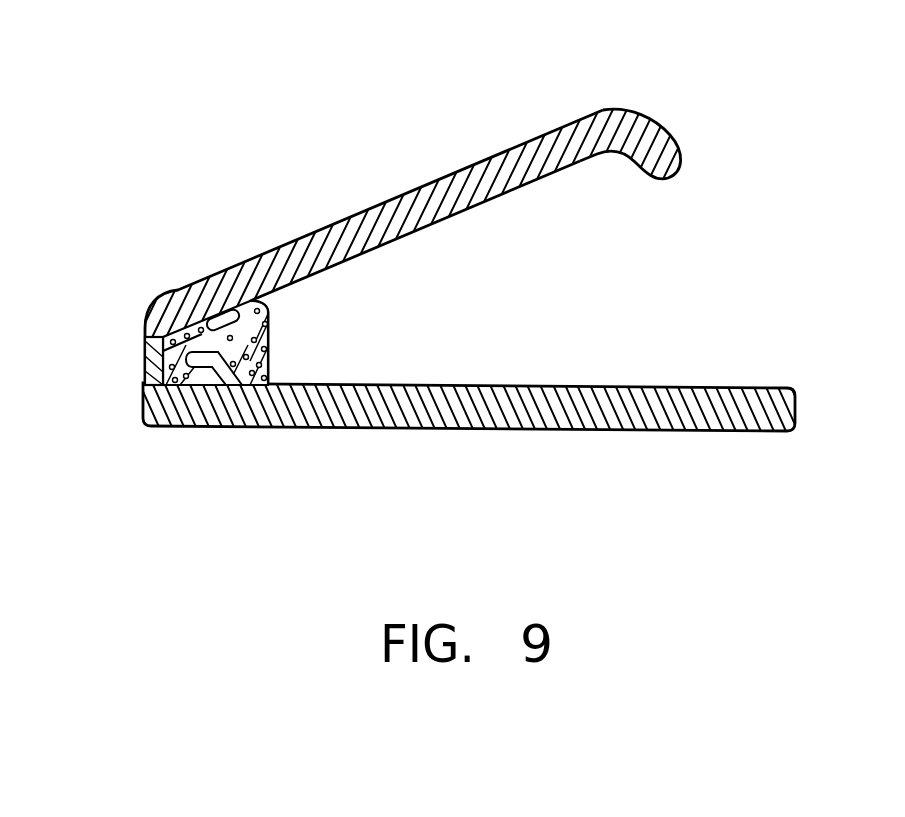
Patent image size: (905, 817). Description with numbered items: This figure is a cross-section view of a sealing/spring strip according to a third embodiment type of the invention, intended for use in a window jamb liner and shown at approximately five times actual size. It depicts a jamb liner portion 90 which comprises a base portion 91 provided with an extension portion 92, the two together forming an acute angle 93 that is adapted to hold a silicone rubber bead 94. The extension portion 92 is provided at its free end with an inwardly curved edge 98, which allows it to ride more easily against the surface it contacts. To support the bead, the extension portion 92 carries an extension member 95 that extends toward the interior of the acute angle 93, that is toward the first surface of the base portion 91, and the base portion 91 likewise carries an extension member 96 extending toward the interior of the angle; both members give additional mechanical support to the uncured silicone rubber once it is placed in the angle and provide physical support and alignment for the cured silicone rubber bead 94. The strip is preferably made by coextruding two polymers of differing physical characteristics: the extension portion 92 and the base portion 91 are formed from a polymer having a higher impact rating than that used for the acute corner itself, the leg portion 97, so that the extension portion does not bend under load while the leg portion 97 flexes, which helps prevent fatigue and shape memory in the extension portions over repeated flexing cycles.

The jamb liner portion 90 is at (313, 111).
The base portion 91 is at (662, 432).
The extension portion 92 is at (413, 187).
The acute angle 93 is at (324, 341).
The silicone rubber bead 94 is at (232, 385).
The extension member 95 is at (209, 318).
The extension member 96 is at (178, 362).
The leg portion 97 is at (158, 344).
The inwardly curved edge 98 is at (626, 110).